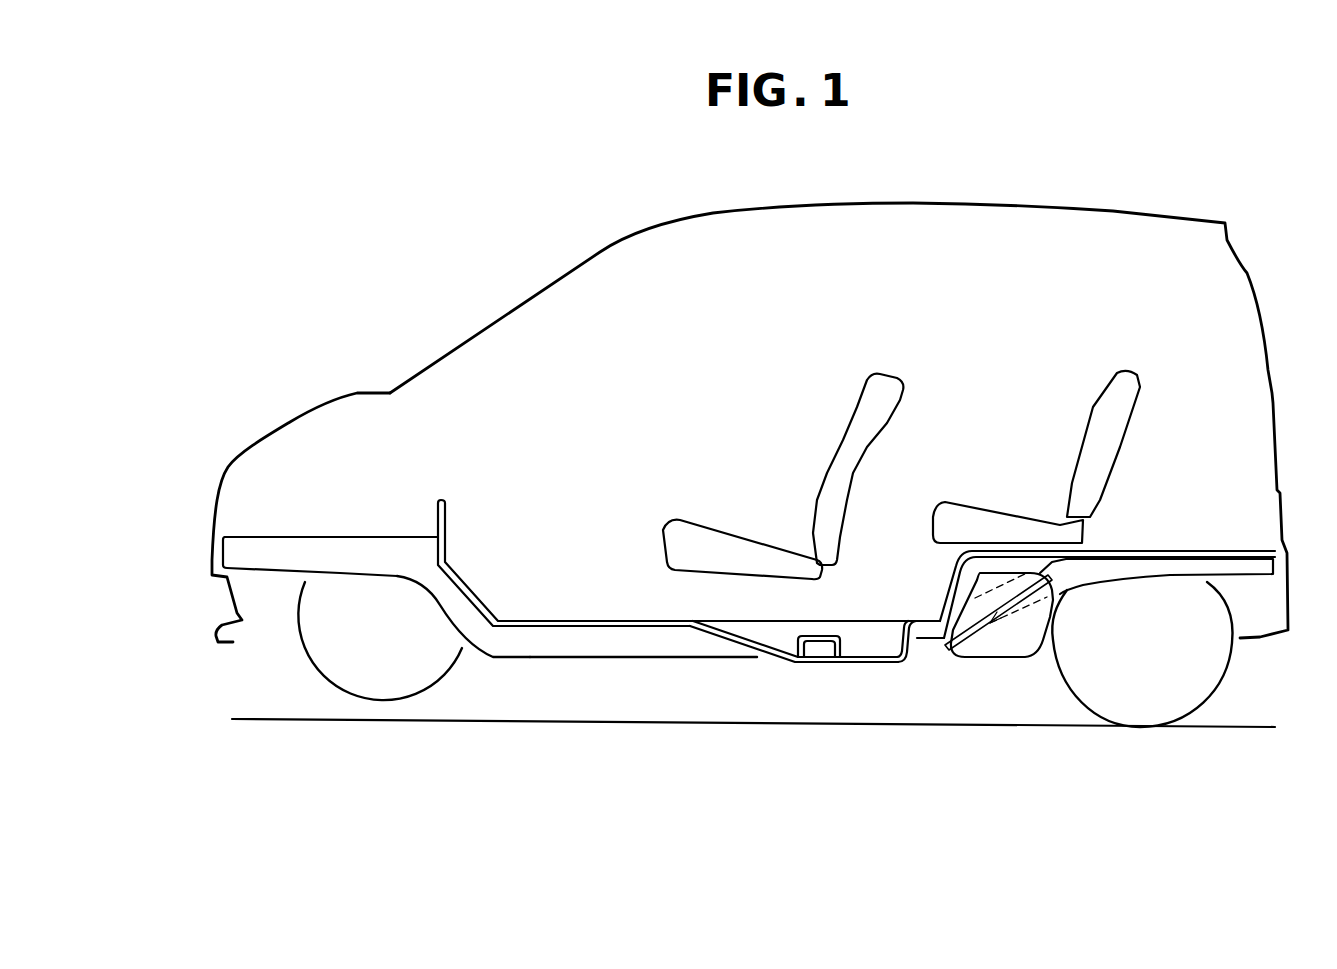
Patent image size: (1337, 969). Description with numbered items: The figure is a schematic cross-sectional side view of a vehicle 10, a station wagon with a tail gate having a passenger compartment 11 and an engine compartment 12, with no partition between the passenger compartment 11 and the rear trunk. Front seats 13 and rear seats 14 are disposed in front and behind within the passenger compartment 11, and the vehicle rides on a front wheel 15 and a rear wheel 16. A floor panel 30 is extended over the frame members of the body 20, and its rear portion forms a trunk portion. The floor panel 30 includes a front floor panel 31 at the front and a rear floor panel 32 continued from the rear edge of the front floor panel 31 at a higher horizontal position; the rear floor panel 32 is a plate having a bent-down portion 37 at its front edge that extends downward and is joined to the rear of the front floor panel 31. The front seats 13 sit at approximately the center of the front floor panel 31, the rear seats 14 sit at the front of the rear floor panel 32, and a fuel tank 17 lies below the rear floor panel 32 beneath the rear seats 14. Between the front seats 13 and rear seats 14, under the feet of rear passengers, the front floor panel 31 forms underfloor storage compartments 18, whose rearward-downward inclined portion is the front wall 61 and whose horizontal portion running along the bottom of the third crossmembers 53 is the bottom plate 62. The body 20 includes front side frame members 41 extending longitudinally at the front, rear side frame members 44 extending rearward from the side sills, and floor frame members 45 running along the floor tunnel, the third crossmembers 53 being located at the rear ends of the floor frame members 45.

The vehicle 10 is at (278, 238).
The passenger compartment 11 is at (571, 414).
The engine compartment 12 is at (374, 440).
The front seats 13 is at (707, 523).
The rear seats 14 is at (993, 513).
The front wheel 15 is at (425, 685).
The rear wheel 16 is at (1120, 708).
The fuel tank 17 is at (1010, 643).
The underfloor storage compartments 18 is at (871, 651).
The body 20 is at (269, 594).
The floor panel 30 is at (628, 641).
The front floor panel 31 is at (662, 622).
The rear floor panel 32 is at (1220, 548).
The bent-down portion 37 is at (943, 587).
The front side frame members 41 is at (368, 563).
The rear side frame members 44 is at (1167, 570).
The floor frame members 45 is at (560, 647).
The third crossmembers 53 is at (810, 640).
The front wall of the underfloor storage compartments 61 is at (737, 647).
The bottom plate of the underfloor storage compartments 62 is at (893, 662).